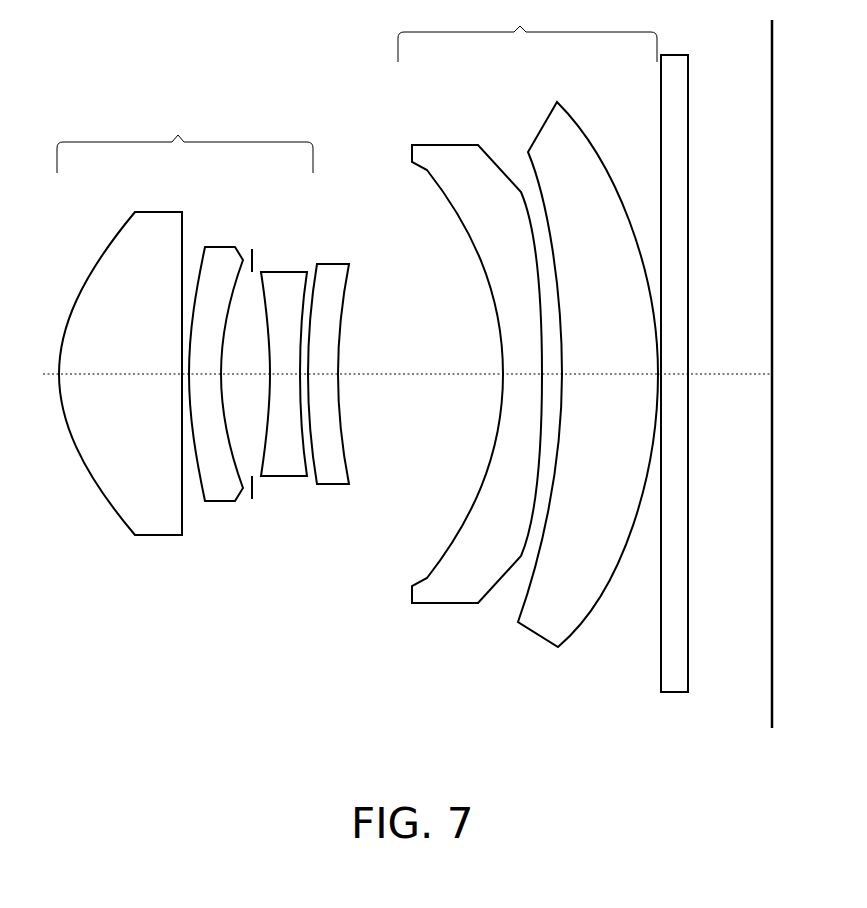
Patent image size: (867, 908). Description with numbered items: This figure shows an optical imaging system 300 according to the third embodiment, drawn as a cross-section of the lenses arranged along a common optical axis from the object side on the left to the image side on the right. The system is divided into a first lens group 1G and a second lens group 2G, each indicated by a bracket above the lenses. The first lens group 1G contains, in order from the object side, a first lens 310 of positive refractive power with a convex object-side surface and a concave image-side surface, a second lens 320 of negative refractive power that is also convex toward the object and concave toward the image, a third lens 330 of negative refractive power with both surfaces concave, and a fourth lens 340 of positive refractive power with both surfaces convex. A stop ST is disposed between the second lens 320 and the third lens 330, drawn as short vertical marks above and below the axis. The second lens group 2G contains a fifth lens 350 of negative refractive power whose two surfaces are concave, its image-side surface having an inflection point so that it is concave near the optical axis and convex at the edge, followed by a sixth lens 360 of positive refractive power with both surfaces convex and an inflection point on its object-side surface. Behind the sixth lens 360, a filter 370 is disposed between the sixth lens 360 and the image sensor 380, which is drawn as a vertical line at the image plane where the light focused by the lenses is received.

The optical imaging system 300 is at (95, 74).
The first lens group 1G is at (185, 140).
The second lens group 2G is at (527, 31).
The first lens 310 is at (145, 538).
The second lens 320 is at (222, 503).
The stop ST is at (250, 499).
The third lens 330 is at (285, 478).
The fourth lens 340 is at (335, 486).
The fifth lens 350 is at (445, 605).
The sixth lens 360 is at (537, 629).
The filter 370 is at (659, 668).
The image sensor 380 is at (770, 707).